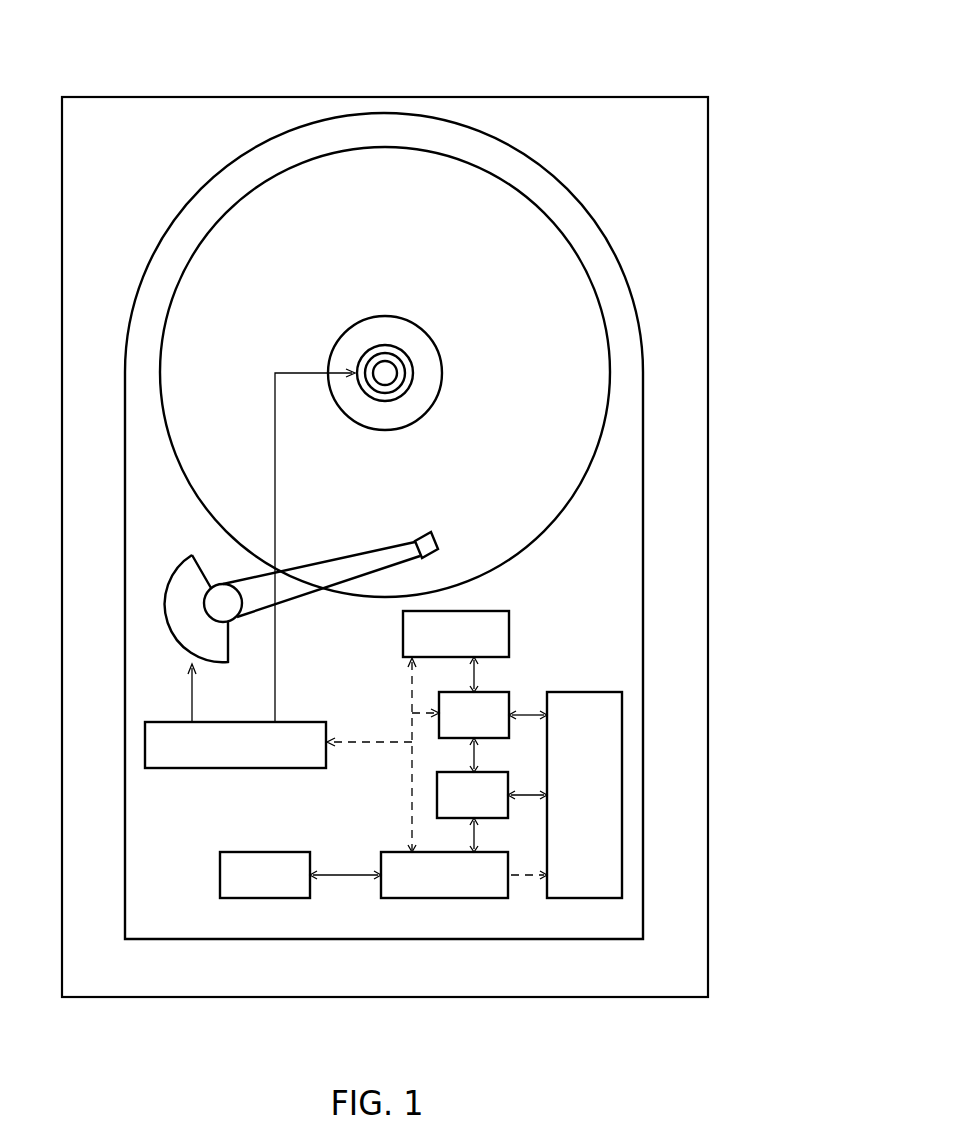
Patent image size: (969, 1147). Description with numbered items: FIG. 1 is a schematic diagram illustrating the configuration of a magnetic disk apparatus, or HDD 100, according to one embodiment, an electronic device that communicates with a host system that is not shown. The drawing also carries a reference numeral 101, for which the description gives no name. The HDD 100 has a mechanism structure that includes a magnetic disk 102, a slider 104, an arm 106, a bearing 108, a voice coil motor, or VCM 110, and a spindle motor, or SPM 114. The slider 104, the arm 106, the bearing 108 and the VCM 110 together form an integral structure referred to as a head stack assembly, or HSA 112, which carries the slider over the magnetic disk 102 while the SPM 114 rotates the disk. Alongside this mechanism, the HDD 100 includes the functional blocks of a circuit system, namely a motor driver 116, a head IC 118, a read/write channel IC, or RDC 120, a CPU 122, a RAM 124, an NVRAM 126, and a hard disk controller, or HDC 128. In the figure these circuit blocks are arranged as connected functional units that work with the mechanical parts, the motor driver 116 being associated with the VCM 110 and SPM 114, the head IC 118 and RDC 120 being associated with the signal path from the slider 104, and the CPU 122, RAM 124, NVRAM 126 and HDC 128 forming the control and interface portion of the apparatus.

The disk drive system 100 is at (583, 84).
The housing 101 is at (685, 485).
The magnetic disk 102 is at (527, 200).
The head 104 is at (437, 545).
The actuator arm 106 is at (290, 567).
The pivot 108 is at (223, 584).
The voice coil motor 110 is at (178, 578).
The actuator assembly 112 is at (132, 612).
The spindle motor 114 is at (385, 344).
The motor driver 116 is at (327, 722).
The head IC 118 is at (510, 613).
The read/write channel (RDC) 120 is at (490, 691).
The CPU 122 is at (457, 898).
The RAM 124 is at (437, 793).
The NVRAM 126 is at (260, 852).
The hard disk controller (HDC) 128 is at (582, 692).